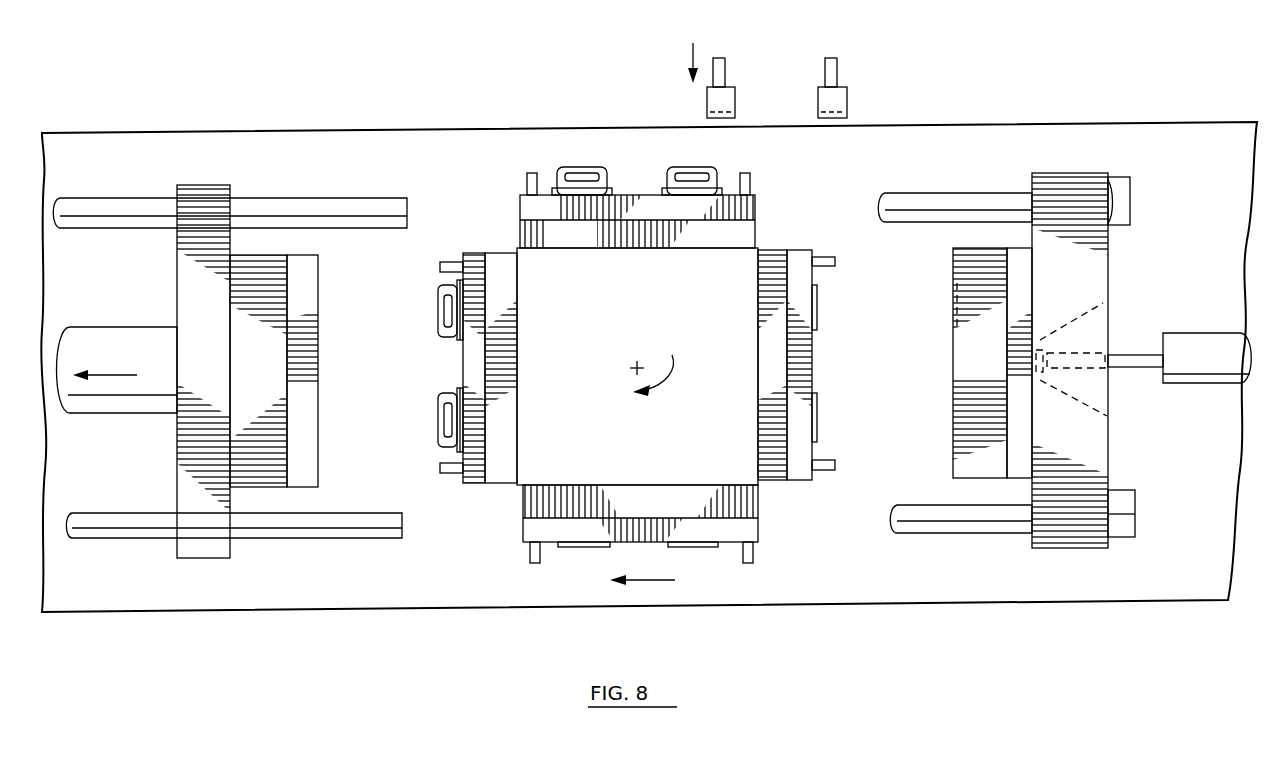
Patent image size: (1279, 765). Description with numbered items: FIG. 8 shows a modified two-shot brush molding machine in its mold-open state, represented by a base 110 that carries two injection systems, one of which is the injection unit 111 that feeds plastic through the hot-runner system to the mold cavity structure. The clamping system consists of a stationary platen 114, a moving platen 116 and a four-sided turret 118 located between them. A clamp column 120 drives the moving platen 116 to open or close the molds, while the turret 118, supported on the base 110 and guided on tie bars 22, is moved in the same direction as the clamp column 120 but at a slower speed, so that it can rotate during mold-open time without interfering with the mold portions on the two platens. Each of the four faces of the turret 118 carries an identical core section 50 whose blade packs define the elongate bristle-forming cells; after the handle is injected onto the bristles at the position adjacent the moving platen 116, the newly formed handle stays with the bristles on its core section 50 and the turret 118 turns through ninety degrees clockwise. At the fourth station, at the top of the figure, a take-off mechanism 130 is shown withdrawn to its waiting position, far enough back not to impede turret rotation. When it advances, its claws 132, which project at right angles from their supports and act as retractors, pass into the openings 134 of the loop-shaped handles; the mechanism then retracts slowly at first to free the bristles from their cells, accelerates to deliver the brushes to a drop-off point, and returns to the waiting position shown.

The tie bars 22 is at (122, 205).
The core section 50 is at (495, 242).
The base 110 is at (1195, 587).
The injection unit 111 is at (1203, 372).
The stationary platen 114 is at (1072, 530).
The moving platen 116 is at (197, 540).
The turret 118 is at (540, 468).
The clamp column 120 is at (122, 400).
The take-off mechanism 130 is at (648, 75).
The claws 132 is at (740, 115).
The openings 134 is at (438, 312).